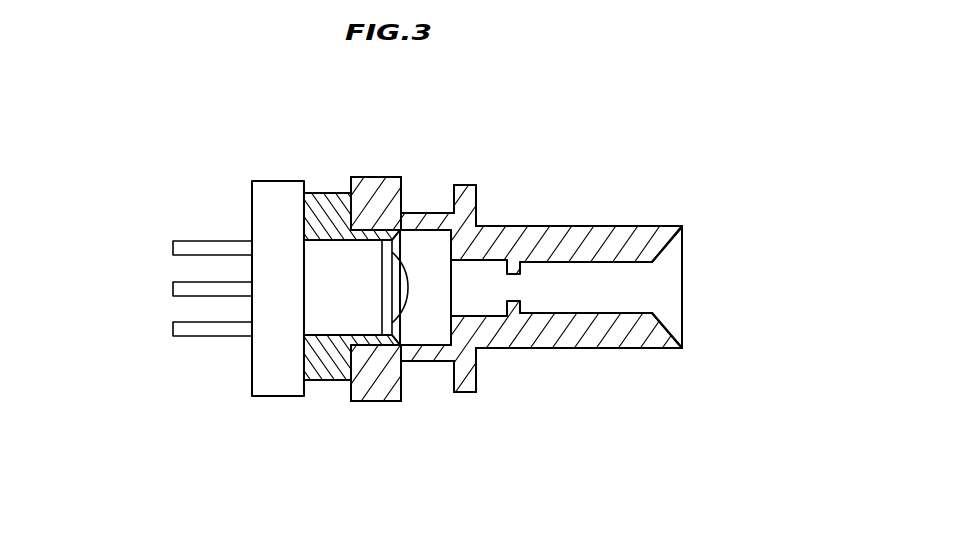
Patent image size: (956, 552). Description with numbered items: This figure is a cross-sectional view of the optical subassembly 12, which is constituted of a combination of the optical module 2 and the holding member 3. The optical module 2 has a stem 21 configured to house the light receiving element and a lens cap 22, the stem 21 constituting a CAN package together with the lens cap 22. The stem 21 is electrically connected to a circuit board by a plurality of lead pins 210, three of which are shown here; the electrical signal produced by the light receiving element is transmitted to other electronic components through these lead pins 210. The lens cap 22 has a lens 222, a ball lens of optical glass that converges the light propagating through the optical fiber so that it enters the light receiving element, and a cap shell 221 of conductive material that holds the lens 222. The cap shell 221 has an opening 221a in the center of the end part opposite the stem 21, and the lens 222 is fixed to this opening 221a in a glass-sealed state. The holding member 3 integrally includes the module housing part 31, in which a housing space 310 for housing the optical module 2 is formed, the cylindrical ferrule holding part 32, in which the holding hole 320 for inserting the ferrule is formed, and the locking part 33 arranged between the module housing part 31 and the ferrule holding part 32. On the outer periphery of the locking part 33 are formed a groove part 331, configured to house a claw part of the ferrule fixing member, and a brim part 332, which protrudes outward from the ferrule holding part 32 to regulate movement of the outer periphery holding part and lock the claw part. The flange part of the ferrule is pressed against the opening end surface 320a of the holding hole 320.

The optical module 2 is at (314, 400).
The optical subassembly 12 is at (256, 413).
The stem 21 is at (258, 372).
The lead pins 210 is at (173, 332).
The lens cap 22 is at (567, 479).
The cap shell 221 is at (348, 323).
The opening 221a is at (405, 272).
The lens 222 is at (404, 298).
The holding member 3 is at (629, 127).
The module housing part 31 is at (347, 166).
The housing space 310 is at (426, 248).
The locking part 33 is at (424, 176).
The groove part 331 is at (429, 213).
The brim part 332 is at (477, 373).
The ferrule holding part 32 is at (622, 366).
The holding hole 320 is at (603, 270).
The opening end surface 320a is at (683, 258).